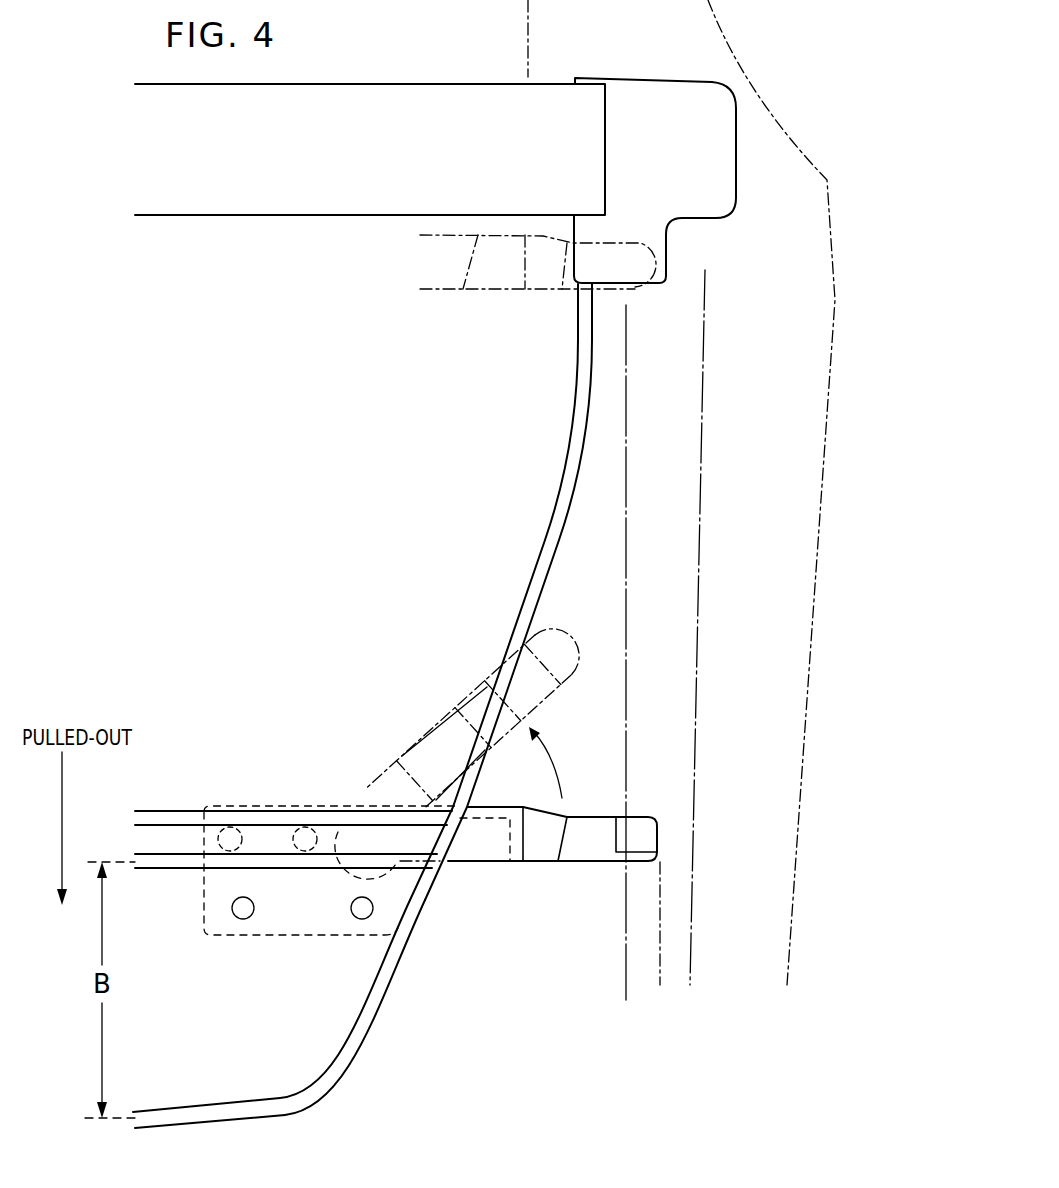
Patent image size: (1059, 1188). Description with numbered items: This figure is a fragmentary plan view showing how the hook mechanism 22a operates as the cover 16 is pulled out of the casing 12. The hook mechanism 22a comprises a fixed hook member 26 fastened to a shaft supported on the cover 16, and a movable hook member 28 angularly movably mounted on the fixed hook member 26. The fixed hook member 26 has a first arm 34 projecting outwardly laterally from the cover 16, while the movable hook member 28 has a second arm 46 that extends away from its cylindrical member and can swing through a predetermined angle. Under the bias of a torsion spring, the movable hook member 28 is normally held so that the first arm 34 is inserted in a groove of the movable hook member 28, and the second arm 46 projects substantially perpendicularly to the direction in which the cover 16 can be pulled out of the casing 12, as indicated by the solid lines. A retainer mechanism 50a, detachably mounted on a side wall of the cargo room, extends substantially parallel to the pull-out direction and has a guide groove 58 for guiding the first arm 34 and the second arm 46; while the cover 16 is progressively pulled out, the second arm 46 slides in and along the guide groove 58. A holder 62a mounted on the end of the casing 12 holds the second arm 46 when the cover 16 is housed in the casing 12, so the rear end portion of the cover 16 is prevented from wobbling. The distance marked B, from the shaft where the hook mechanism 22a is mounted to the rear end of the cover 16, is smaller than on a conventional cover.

The casing 12 is at (423, 100).
The cover 16 is at (512, 566).
The hook mechanism 22a is at (443, 1006).
The fixed hook member 26 is at (245, 800).
The movable hook member 28 is at (476, 870).
The first arm 34 is at (500, 848).
The second arm 46 is at (587, 848).
The retainer mechanism 50a is at (830, 458).
The guide groove 58 is at (700, 592).
The holder 62a is at (718, 127).